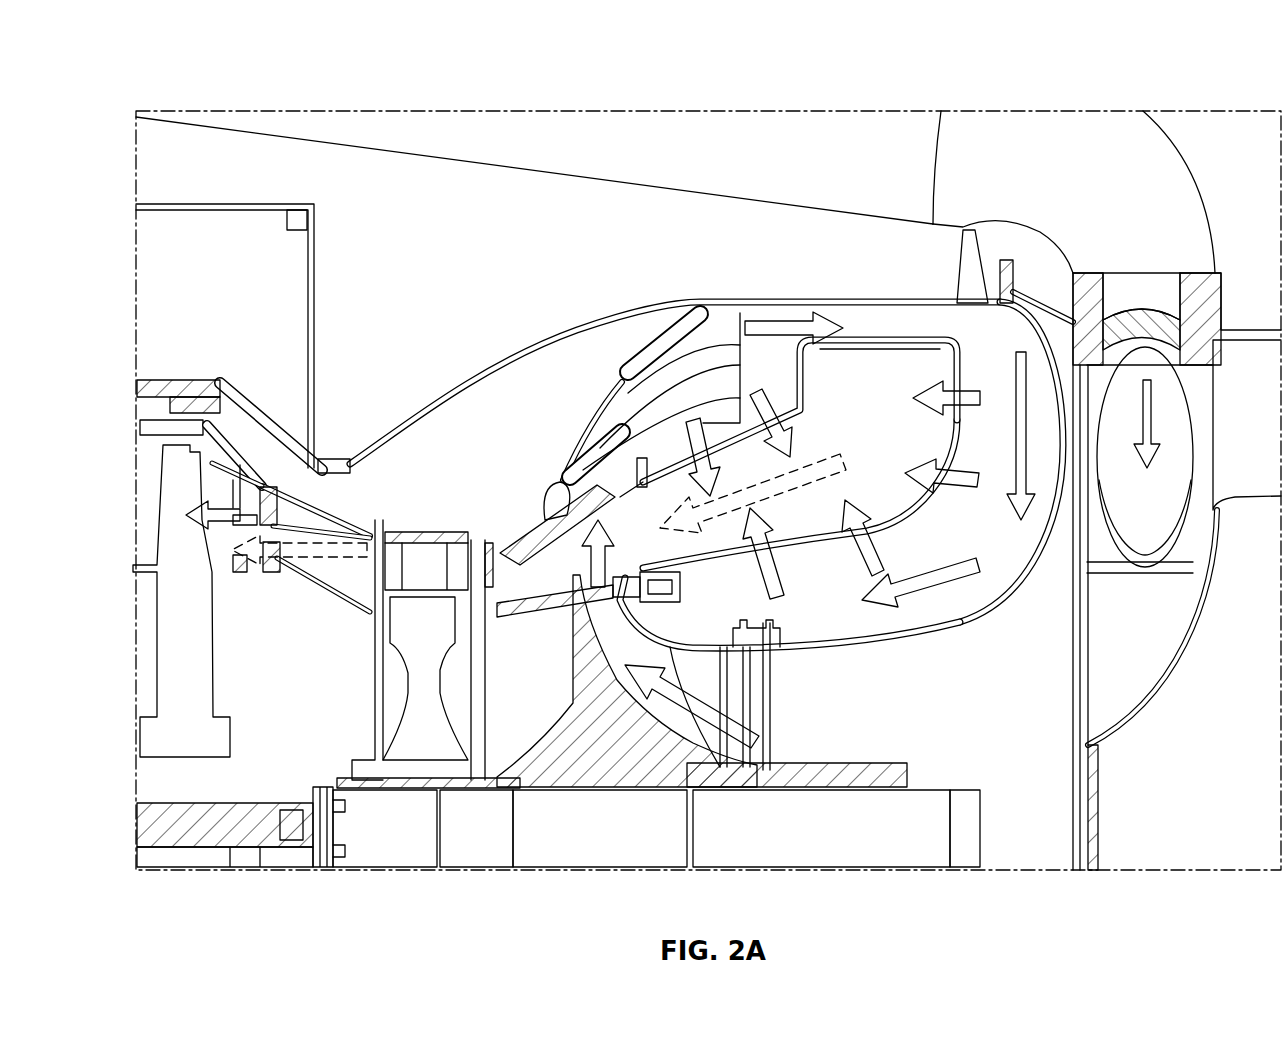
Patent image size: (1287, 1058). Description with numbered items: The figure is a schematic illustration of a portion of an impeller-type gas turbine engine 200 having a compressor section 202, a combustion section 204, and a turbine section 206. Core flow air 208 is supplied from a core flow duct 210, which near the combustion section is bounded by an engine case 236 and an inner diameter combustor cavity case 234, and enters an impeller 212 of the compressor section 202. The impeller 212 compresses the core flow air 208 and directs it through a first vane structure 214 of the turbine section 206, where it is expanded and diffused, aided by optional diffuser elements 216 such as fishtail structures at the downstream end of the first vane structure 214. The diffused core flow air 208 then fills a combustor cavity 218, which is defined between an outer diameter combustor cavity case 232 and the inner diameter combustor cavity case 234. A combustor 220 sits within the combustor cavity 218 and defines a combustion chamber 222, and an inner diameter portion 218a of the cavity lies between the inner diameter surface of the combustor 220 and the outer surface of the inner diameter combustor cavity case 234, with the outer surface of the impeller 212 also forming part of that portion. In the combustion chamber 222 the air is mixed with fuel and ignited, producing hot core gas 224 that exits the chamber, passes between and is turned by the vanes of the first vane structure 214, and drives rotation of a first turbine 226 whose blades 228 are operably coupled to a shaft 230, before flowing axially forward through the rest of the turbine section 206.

The gas turbine engine 200 is at (198, 70).
The compressor section 202 is at (808, 712).
The combustion section 204 is at (920, 558).
The turbine section 206 is at (466, 440).
The core flow air 208 is at (795, 315).
The core flow duct 210 is at (893, 146).
The impeller 212 is at (690, 730).
The first vane structure 214 is at (545, 505).
The diffuser elements 216 is at (675, 345).
The combustor cavity 218 is at (988, 330).
The inner diameter portion of the combustor cavity 218a is at (750, 611).
The combustor 220 is at (938, 512).
The combustion chamber 222 is at (887, 409).
The hot core gas 224 is at (320, 565).
The first turbine 226 is at (425, 745).
The blades 228 is at (423, 566).
The shaft 230 is at (600, 845).
The outer diameter combustor cavity case 232 is at (553, 345).
The inner diameter combustor cavity case 234 is at (1000, 605).
The engine case 236 is at (1138, 710).